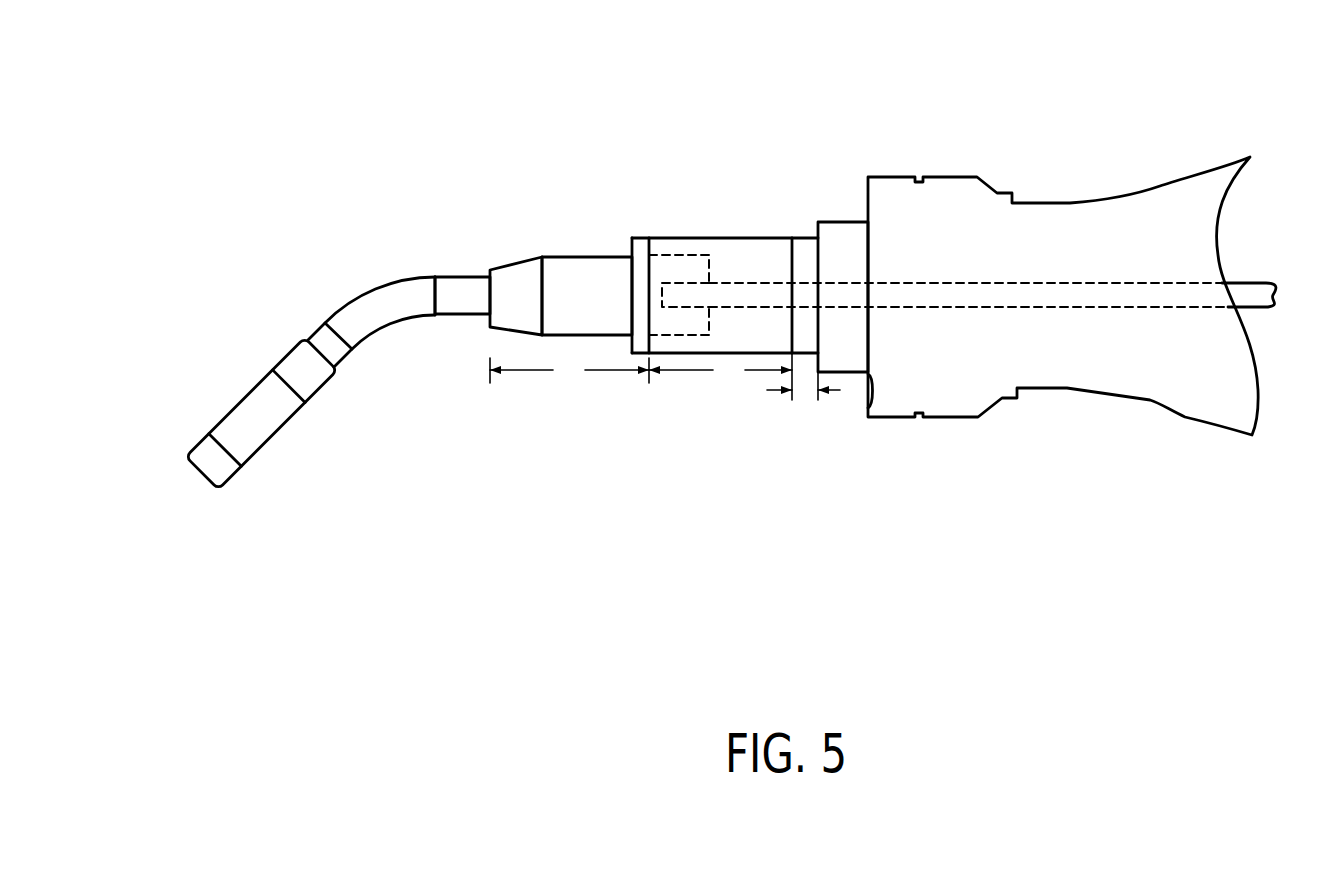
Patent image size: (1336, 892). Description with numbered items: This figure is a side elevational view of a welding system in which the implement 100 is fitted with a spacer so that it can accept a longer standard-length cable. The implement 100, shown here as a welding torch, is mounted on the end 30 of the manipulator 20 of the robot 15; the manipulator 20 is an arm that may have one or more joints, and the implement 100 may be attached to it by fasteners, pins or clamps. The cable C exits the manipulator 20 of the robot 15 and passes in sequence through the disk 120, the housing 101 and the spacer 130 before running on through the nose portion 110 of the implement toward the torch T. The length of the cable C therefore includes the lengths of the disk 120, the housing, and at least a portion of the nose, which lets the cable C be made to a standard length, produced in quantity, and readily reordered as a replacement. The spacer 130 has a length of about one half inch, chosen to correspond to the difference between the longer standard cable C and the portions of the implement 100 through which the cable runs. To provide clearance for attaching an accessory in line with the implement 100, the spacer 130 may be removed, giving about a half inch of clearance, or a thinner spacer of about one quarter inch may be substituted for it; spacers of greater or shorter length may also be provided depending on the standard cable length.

The implement 100 is at (429, 170).
The torch T is at (243, 415).
The neck cylinder body 110 is at (612, 277).
The housing 101 is at (747, 248).
The spacer 130 is at (807, 340).
The disk 120 is at (843, 233).
The robot 15 is at (1071, 120).
The manipulator 20 is at (1060, 375).
The end 30 is at (868, 402).
The cable C is at (1250, 284).